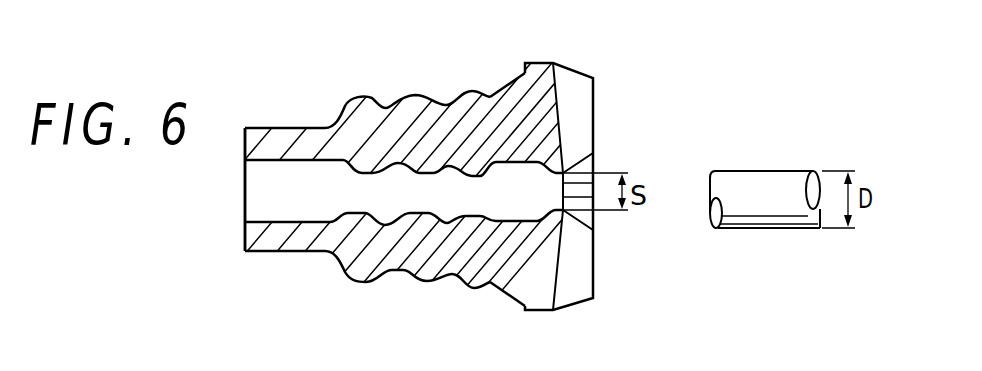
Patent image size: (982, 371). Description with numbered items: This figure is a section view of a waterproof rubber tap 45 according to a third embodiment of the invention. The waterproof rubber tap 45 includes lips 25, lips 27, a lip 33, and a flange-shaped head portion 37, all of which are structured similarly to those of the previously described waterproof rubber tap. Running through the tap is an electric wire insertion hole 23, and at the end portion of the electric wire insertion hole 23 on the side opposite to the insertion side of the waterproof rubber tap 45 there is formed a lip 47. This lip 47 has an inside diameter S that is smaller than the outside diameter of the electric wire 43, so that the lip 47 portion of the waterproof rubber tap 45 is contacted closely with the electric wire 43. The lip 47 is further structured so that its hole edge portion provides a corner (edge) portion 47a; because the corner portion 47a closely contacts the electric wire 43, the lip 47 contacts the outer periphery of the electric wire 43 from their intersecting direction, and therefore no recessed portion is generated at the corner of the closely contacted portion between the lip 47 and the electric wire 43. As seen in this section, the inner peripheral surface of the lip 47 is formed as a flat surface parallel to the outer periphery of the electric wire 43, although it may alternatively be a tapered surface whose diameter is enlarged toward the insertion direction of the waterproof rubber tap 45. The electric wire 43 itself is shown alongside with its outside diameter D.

The electric wire insertion hole 23 is at (273, 203).
The lips 25 is at (463, 177).
The lips 27 is at (462, 93).
The lip 33 is at (510, 88).
The flange-shaped head portion 37 is at (538, 311).
The electric wire 43 is at (752, 182).
The waterproof rubber tap 45 is at (310, 120).
The lip 47 is at (563, 212).
The corner portion 47a is at (568, 176).